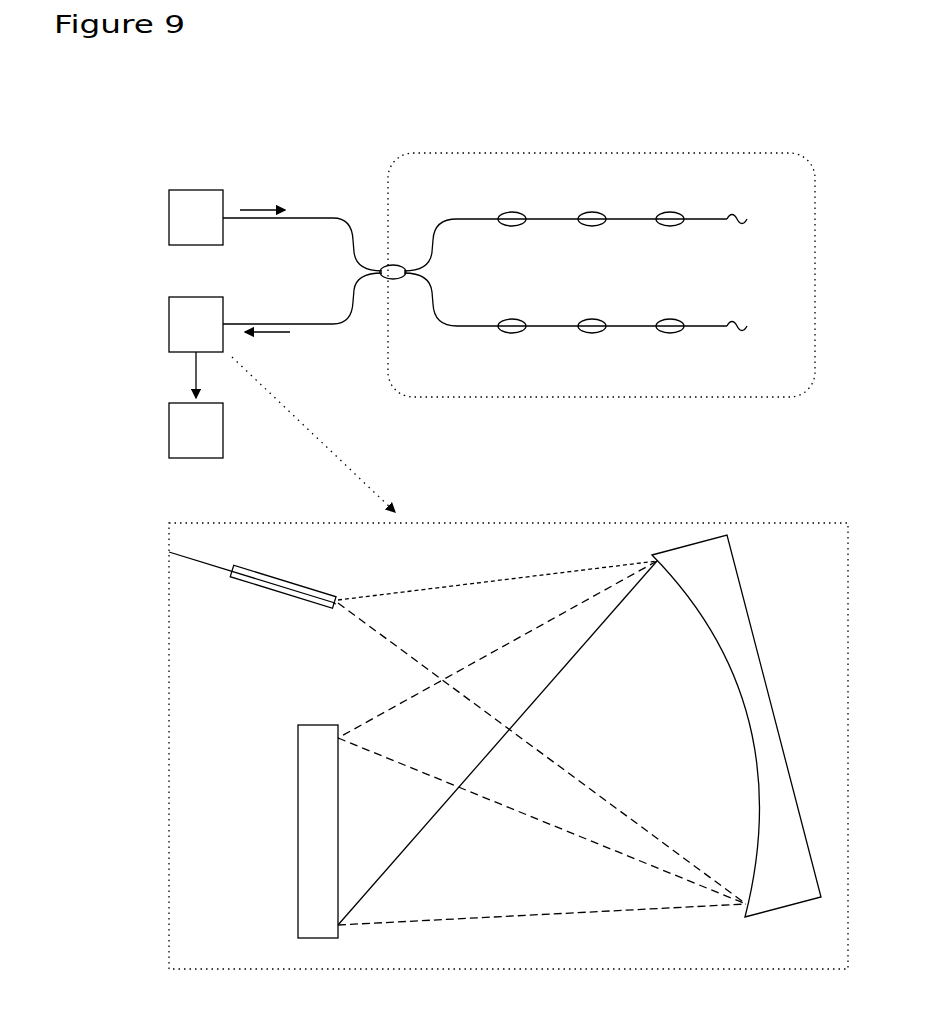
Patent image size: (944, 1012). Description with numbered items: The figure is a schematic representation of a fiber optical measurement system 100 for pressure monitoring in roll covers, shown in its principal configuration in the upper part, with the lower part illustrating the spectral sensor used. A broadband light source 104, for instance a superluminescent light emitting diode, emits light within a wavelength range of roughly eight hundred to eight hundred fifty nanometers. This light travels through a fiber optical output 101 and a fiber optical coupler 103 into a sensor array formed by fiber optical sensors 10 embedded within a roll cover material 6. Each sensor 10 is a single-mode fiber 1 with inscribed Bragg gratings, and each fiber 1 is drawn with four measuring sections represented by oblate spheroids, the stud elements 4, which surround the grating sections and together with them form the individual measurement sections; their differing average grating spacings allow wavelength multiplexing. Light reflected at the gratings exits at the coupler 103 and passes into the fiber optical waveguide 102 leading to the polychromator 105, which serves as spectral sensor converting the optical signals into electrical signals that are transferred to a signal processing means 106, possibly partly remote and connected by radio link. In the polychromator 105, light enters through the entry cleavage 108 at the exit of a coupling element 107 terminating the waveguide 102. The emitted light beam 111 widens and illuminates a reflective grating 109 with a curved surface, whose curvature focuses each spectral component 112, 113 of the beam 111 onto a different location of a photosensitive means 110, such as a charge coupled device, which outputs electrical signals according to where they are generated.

The fiber optical measurement system 100 is at (422, 112).
The roll cover material 6 is at (500, 153).
The broadband light source 104 is at (212, 190).
The polychromator 105 is at (200, 297).
The signal processing means 106 is at (168, 445).
The fiber optical output 101 is at (313, 218).
The fiber optical waveguide 102 is at (305, 327).
The fiber optical coupler 103 is at (396, 279).
The fiber optical sensor 10 is at (570, 226).
The stud element 4 is at (518, 213).
The fiber 1 is at (746, 276).
The coupling element 107 is at (285, 596).
The entry cleavage 108 is at (342, 599).
The light beam 111 is at (513, 596).
The reflective grating 109 is at (747, 585).
The spectral component 112 is at (408, 728).
The photosensitive means 110 is at (310, 812).
The spectral component 113 is at (408, 900).